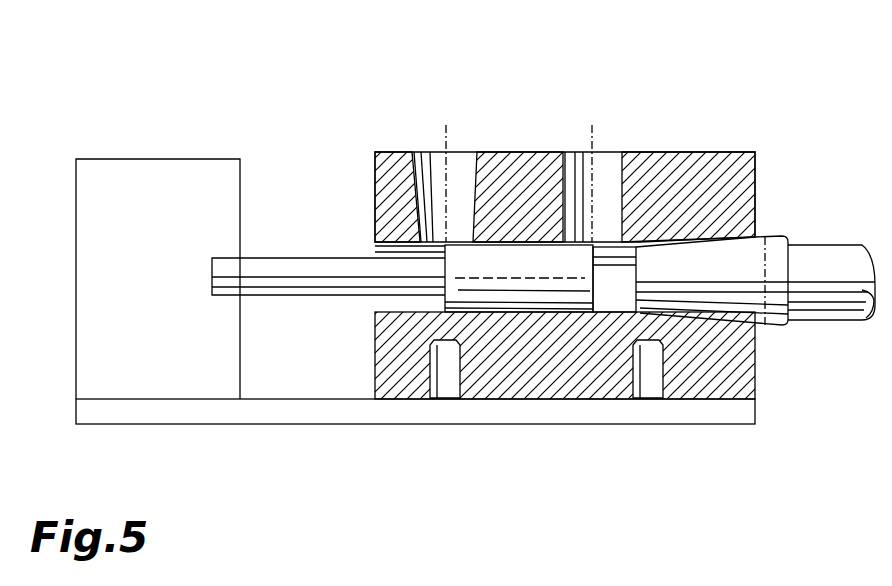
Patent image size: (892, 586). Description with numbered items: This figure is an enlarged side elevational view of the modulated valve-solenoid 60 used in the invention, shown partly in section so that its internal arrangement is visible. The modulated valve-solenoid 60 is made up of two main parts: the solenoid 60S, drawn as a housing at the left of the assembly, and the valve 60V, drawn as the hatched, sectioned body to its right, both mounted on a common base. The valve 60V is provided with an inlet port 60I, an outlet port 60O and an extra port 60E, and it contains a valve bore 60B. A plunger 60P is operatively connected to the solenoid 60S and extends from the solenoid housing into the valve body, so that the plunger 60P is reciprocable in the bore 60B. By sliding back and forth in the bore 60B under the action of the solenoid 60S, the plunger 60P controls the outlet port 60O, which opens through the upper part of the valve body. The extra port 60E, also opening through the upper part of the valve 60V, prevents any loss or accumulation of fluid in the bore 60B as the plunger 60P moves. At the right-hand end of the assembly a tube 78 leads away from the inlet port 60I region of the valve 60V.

The modulated valve-solenoid 60 is at (378, 130).
The solenoid 60S is at (110, 178).
The plunger 60P is at (265, 278).
The valve 60V is at (714, 155).
The extra port 60E is at (440, 173).
The outlet port 60O is at (608, 177).
The valve bore 60B is at (613, 300).
The inlet port 60I is at (733, 253).
The tube 78 is at (812, 240).